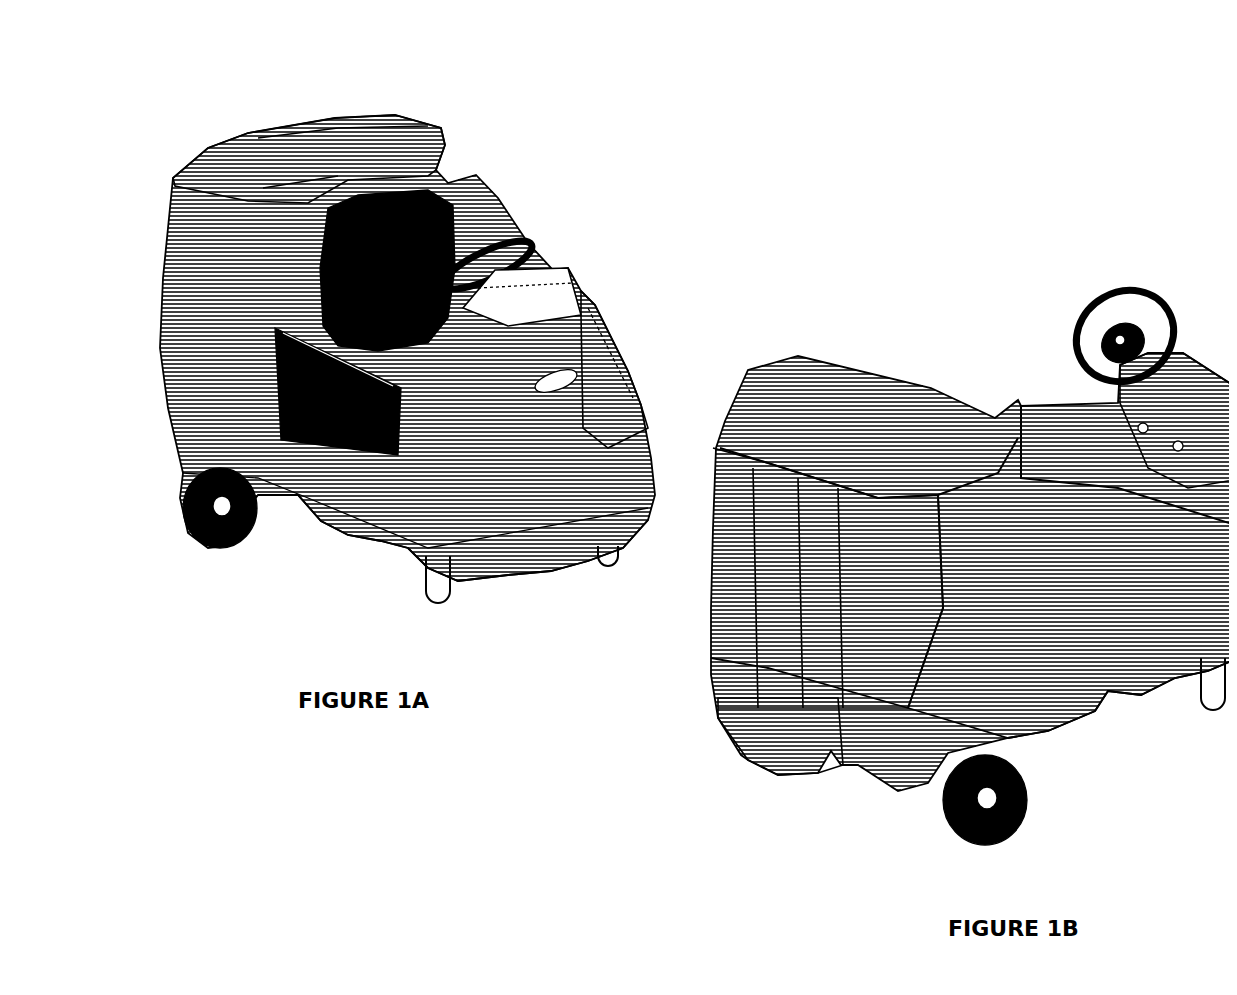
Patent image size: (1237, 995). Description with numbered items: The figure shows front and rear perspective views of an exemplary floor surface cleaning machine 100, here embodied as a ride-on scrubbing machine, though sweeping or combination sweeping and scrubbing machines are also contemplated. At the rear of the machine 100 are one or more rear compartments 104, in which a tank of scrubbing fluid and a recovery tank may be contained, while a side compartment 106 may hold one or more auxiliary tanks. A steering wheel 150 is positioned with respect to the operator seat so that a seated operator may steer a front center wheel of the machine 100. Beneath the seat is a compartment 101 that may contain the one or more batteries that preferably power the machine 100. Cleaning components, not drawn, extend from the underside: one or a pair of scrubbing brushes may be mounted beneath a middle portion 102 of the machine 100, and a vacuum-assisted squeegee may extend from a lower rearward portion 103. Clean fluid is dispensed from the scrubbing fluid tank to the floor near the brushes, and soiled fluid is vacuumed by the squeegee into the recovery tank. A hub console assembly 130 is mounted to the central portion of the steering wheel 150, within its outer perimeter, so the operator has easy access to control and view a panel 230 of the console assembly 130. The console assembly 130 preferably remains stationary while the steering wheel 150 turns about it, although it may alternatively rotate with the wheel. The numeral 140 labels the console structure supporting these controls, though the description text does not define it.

In FIG. 1A, the floor surface cleaning machine 100 is at (618, 109).
In FIG. 1B, the floor surface cleaning machine 100 is at (1084, 159).
In FIG. 1A, the compartment 101 is at (393, 441).
In FIG. 1A, the middle portion 102 is at (309, 552).
In FIG. 1B, the middle portion 102 is at (1112, 727).
In FIG. 1B, the lower rearward portion 103 is at (826, 796).
In FIG. 1A, the rear compartment 104 is at (196, 124).
In FIG. 1B, the rear compartment 104 is at (685, 650).
In FIG. 1A, the side compartment 106 is at (613, 363).
In FIG. 1B, the hub console assembly 130 is at (1136, 299).
In FIG. 1A, the operator console 140 is at (545, 260).
In FIG. 1B, the operator console 140 is at (1062, 352).
In FIG. 1A, the steering wheel 150 is at (512, 228).
In FIG. 1B, the steering wheel 150 is at (1160, 292).
In FIG. 1B, the panel 230 is at (1108, 326).